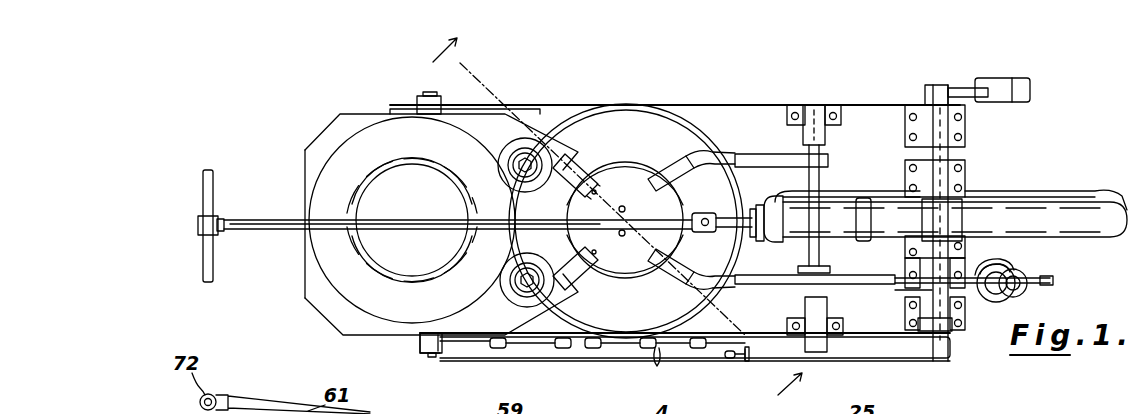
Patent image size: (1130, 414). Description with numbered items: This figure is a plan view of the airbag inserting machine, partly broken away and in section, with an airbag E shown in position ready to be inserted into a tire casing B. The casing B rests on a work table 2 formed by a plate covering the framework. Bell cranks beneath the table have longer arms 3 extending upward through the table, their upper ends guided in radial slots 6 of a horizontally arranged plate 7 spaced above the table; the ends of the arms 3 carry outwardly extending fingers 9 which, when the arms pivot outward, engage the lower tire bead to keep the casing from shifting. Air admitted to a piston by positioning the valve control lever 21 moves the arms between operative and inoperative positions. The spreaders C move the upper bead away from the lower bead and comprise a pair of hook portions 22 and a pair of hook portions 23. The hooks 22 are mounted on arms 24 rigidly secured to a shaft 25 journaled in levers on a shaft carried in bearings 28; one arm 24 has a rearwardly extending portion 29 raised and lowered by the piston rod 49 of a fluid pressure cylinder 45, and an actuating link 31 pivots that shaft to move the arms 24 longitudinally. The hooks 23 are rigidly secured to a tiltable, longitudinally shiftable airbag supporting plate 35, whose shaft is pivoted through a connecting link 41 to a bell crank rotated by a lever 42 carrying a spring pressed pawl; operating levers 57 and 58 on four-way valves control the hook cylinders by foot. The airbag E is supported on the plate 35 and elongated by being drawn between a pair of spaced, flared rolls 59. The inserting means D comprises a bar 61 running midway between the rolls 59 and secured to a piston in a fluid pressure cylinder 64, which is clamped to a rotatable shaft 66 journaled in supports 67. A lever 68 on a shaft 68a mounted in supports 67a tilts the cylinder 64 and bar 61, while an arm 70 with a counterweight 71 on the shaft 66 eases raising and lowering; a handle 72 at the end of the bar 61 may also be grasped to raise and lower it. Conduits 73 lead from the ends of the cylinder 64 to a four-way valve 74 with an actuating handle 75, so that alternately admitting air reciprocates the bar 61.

The work table 2 is at (745, 105).
The longer arms 3 is at (605, 223).
The radial slots 6 is at (626, 208).
The horizontally arranged plate 7 is at (621, 170).
The outwardly extending fingers 9 is at (598, 190).
The valve control lever 21 is at (598, 350).
The hook portions 22 is at (660, 158).
The hook portions 23 is at (598, 158).
The arms 24 is at (855, 275).
The shaft 25 is at (821, 172).
The bearings 28 is at (841, 108).
The rearwardly extending portion 29 is at (1016, 266).
The actuating link 31 is at (760, 333).
The airbag supporting plate 35 is at (325, 133).
The connecting link 41 is at (446, 356).
The lever 42 is at (654, 360).
The fluid pressure cylinder 45 is at (1006, 298).
The piston rod 49 is at (1027, 288).
The operating lever 57 is at (716, 350).
The operating lever 58 is at (510, 350).
The rolls 59 is at (513, 147).
The bar 61 is at (284, 219).
The fluid pressure cylinder 64 is at (1085, 238).
The rotatable shaft 66 is at (968, 149).
The supports 67 is at (968, 128).
The supports 67a is at (968, 176).
The lever 68 is at (920, 362).
The shaft 68a is at (930, 291).
The arm 70 is at (958, 88).
The counterweight 71 is at (1017, 78).
The handle 72 is at (207, 170).
The conduits 73 is at (880, 191).
The four-way valve 74 is at (727, 360).
The actuating handle 75 is at (741, 360).
The tire casing B is at (640, 104).
The spreaders C is at (685, 177).
The mechanical means for inserting the airbag D is at (685, 263).
The airbag E is at (322, 253).